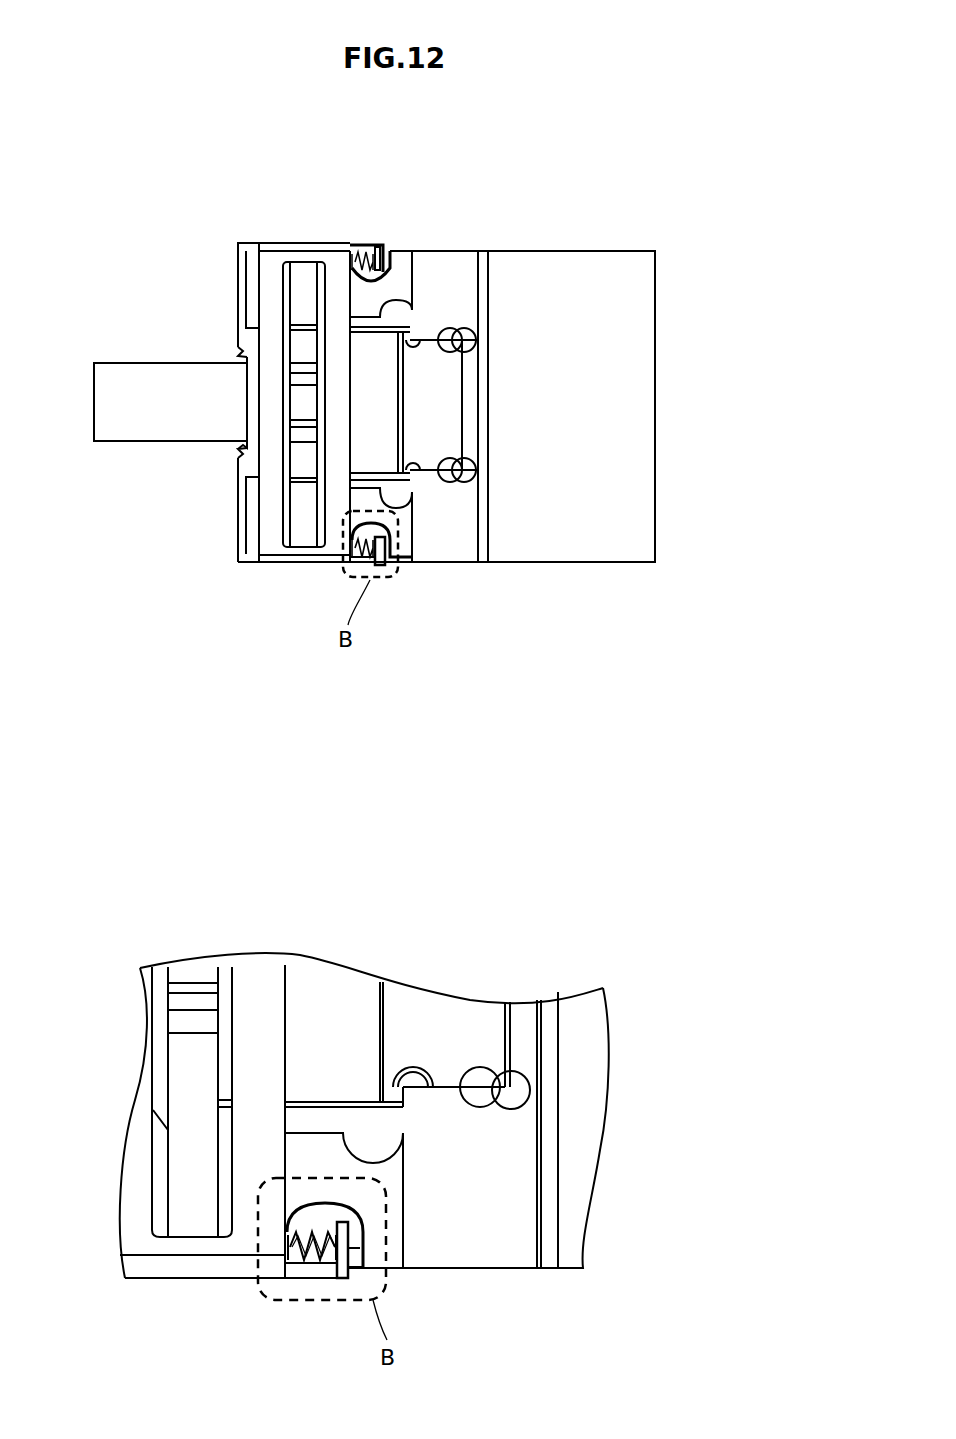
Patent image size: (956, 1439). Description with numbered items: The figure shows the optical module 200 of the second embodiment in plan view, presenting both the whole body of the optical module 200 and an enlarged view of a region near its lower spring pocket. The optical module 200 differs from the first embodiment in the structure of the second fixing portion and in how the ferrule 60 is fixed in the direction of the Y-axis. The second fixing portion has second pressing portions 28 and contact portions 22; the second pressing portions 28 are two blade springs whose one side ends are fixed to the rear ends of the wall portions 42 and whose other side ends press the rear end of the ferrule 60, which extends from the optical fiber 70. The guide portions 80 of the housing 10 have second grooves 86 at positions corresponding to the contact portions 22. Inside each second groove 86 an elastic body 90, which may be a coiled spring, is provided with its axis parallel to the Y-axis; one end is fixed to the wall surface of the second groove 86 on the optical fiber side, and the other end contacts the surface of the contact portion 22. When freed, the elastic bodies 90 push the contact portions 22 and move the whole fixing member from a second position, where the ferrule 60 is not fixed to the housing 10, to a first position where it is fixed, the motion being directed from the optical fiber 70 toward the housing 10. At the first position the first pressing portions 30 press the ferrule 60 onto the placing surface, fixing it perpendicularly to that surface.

The housing 10 is at (600, 258).
The contact portion 22 is at (388, 548).
The second pressing portion 28 is at (238, 268).
The first pressing portion 30 is at (300, 283).
The wall portion 42 is at (333, 243).
The ferrule 60 is at (247, 428).
The optical fiber 70 is at (118, 372).
The guide portion 80 is at (397, 260).
The second groove 86 is at (370, 525).
The elastic body 90 is at (310, 1260).
The optical module 200 is at (416, 713).